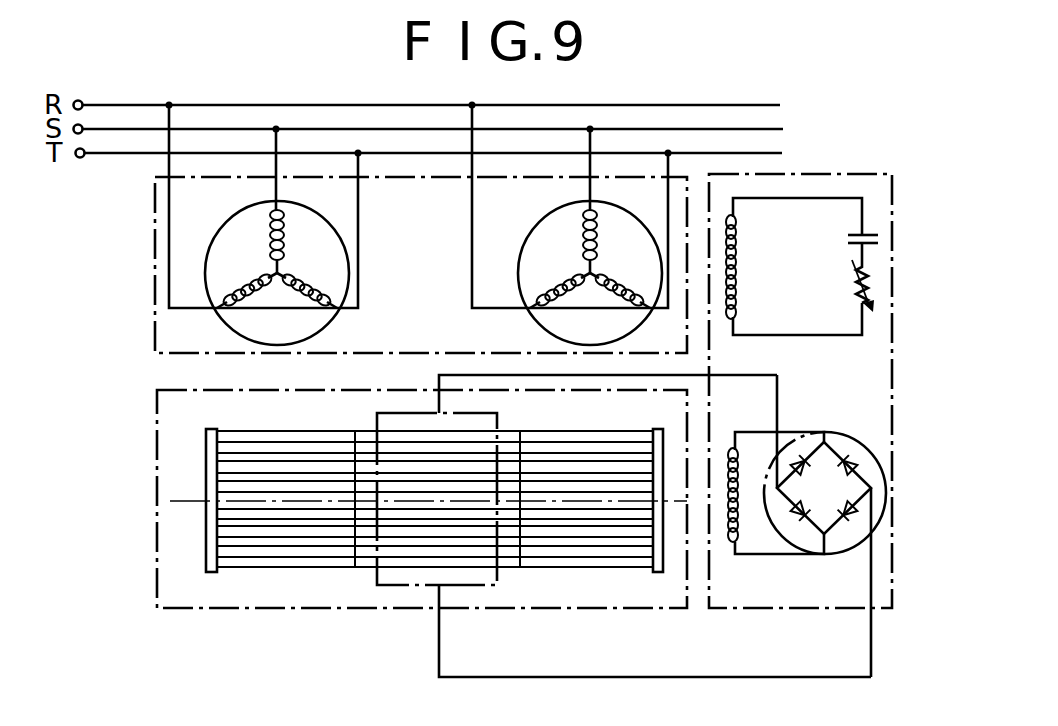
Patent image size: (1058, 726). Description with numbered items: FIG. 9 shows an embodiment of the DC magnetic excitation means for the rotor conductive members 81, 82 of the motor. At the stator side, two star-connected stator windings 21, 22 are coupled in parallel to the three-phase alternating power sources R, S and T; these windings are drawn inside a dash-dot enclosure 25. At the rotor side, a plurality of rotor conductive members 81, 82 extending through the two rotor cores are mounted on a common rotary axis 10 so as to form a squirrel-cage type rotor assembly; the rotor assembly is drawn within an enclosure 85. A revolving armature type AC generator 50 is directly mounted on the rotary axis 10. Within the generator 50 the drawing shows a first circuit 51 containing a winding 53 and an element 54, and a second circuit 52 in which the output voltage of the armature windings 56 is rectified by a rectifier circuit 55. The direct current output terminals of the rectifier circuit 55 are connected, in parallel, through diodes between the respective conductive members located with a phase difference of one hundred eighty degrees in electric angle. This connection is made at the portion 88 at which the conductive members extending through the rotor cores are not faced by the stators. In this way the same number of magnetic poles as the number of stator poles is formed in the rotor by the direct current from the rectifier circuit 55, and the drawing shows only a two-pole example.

The rotary axis 10 is at (185, 501).
The stator winding 21 is at (208, 251).
The stator winding 22 is at (518, 270).
The motor drive unit 25 is at (155, 298).
The revolving armature type AC generator 50 is at (843, 175).
The resonance circuit 51 is at (875, 210).
The rectifier circuit 52 is at (817, 568).
The primary coil 53 is at (745, 307).
The capacitor 54 is at (878, 247).
The rectifier circuit 55 is at (862, 438).
The armature windings 56 is at (745, 528).
The rotor conductive member 81 is at (243, 430).
The rotor conductive member 82 is at (612, 430).
The heat exchanger unit 85 is at (157, 466).
The portion 88 is at (385, 588).